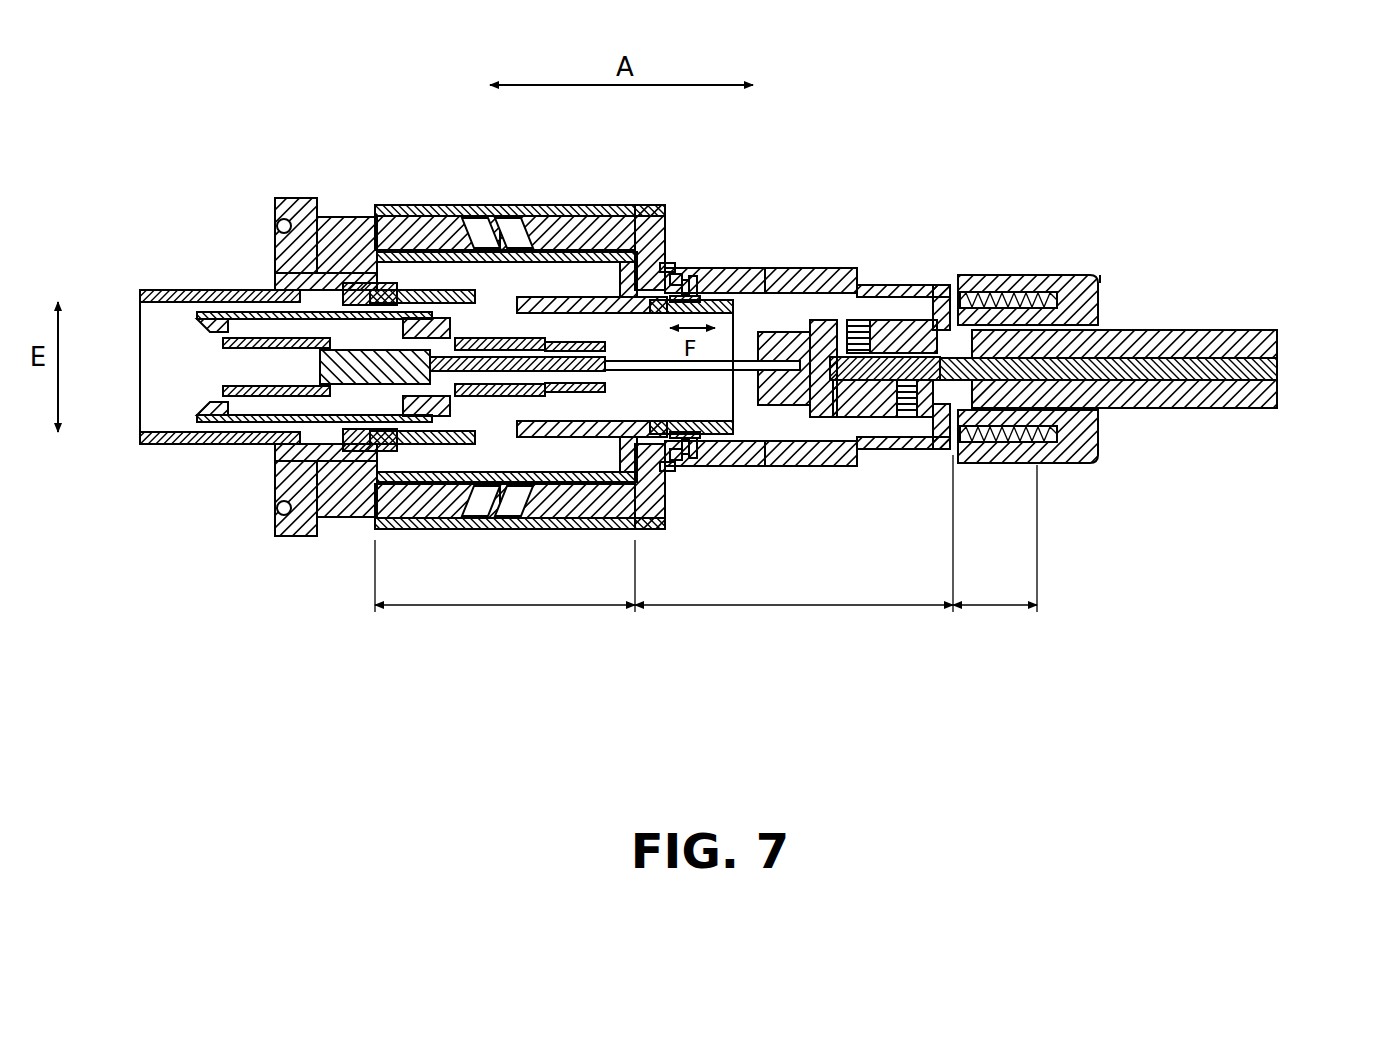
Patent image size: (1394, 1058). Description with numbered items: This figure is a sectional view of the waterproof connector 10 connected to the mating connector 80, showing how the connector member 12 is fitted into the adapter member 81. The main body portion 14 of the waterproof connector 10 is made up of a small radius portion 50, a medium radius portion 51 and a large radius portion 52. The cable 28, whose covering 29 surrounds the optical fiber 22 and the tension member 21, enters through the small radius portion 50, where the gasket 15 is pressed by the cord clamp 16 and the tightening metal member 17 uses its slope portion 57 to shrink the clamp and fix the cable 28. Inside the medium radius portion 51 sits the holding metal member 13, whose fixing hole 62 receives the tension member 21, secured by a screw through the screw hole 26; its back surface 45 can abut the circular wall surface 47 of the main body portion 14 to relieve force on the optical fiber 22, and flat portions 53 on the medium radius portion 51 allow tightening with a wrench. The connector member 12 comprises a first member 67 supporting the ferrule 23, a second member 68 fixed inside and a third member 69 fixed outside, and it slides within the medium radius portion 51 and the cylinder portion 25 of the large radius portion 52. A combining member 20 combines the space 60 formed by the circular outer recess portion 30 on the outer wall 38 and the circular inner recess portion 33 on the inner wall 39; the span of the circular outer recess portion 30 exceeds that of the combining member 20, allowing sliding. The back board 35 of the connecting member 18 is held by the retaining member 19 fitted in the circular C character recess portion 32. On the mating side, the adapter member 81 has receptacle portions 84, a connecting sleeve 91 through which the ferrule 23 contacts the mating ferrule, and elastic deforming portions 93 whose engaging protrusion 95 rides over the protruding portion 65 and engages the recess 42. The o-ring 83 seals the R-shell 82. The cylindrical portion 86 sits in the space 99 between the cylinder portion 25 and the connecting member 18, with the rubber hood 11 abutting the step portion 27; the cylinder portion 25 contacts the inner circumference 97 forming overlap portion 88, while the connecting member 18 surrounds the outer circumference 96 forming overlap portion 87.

The waterproof connector 10 is at (1250, 135).
The rubber hood 11 is at (520, 205).
The connector member 12 is at (585, 297).
The holding metal member 13 is at (865, 320).
The main body portion 14 is at (820, 268).
The gasket 15 is at (1000, 465).
The cord clamp 16 is at (1070, 302).
The tightening metal member 17 is at (1100, 276).
The connecting member 18 is at (448, 218).
The retaining member 19 is at (688, 275).
The combining member 20 is at (676, 275).
The tension member 21 is at (1240, 330).
The optical fiber 22 is at (782, 268).
The ferrule 23 is at (305, 362).
The cylinder portion 25 is at (500, 218).
The screw hole 26 is at (880, 420).
The step portion 27 is at (545, 216).
The cable 28 is at (1270, 408).
The covering 29 is at (1272, 358).
The circular outer recess portion 30 is at (738, 270).
The circular C character recess portion 32 is at (700, 268).
The circular inner recess portion 33 is at (715, 270).
The back board 35 is at (650, 205).
The outer wall 38 is at (572, 205).
The inner wall 39 is at (845, 285).
The recess 42 is at (440, 470).
The back surface 45 is at (945, 287).
The circular wall surface 47 is at (923, 320).
The small radius portion 50 is at (995, 552).
The medium radius portion 51 is at (794, 547).
The large radius portion 52 is at (505, 591).
The flat portions 53 is at (903, 450).
The slope portion 57 is at (1095, 463).
The space 60 is at (668, 263).
The fixing hole 62 is at (830, 420).
The protruding portion 65 is at (372, 283).
The first member 67 is at (475, 470).
The second member 68 is at (555, 470).
The third member 69 is at (592, 455).
The mating connector 80 is at (130, 275).
The adapter member 81 is at (165, 290).
The R-shell 82 is at (290, 198).
The o-ring 83 is at (278, 218).
The receptacle portions 84 is at (175, 330).
The cylindrical portion 86 is at (355, 217).
The overlap portion 87 is at (390, 217).
The overlap portion 88 is at (430, 205).
The connecting sleeve 91 is at (290, 392).
The elastic deforming portions 93 is at (240, 437).
The engaging protrusion 95 is at (205, 312).
The outer circumference 96 is at (338, 217).
The inner circumference 97 is at (300, 276).
The space 99 is at (470, 216).